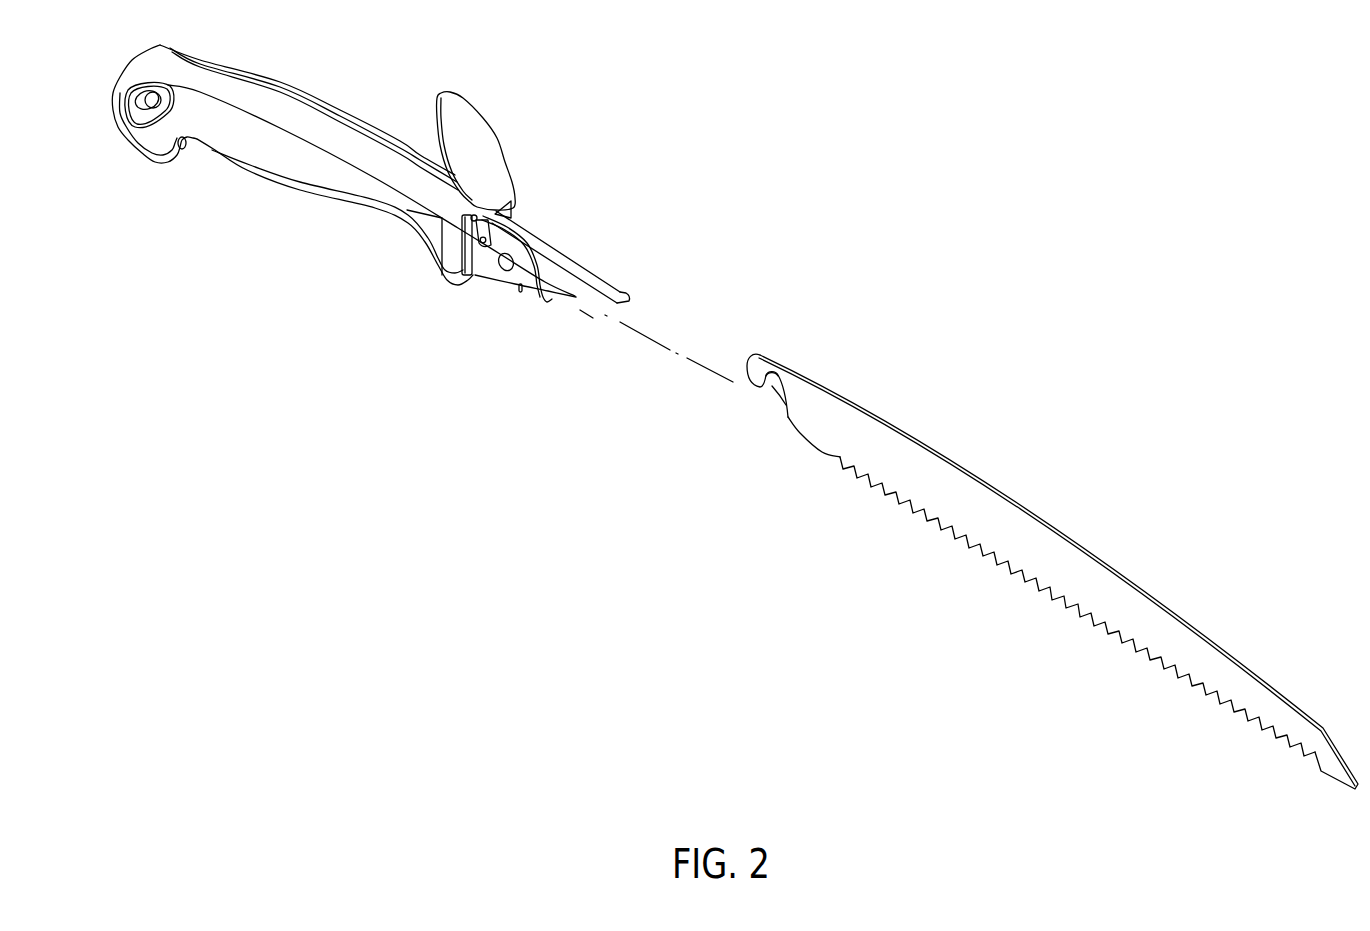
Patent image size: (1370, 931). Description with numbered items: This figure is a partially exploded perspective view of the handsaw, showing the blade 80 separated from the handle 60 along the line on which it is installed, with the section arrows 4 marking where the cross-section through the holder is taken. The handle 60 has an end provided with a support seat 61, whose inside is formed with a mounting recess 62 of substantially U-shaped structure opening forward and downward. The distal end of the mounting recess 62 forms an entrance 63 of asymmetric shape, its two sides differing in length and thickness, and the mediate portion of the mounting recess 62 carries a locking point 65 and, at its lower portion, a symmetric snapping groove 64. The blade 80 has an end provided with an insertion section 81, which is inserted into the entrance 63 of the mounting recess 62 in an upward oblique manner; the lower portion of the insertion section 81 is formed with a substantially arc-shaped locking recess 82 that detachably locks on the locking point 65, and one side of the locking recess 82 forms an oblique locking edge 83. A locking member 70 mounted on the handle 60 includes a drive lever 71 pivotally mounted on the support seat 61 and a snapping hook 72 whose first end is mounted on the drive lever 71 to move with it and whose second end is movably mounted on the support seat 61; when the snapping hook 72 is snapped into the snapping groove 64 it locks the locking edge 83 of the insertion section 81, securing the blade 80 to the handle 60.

The section line 4- 4 is at (421, 211).
The handle 60 is at (375, 130).
The support seat 61 is at (592, 272).
The mounting recess 62 is at (629, 302).
The entrance 63 is at (565, 305).
The snapping groove 64 is at (521, 298).
The locking point 65 is at (505, 272).
The locking member 70 is at (509, 133).
The drive lever 71 is at (487, 164).
The snapping hook 72 is at (532, 236).
The blade 80 is at (942, 458).
The insertion section 81 is at (793, 385).
The locking recess 82 is at (772, 387).
The locking edge 83 is at (780, 417).